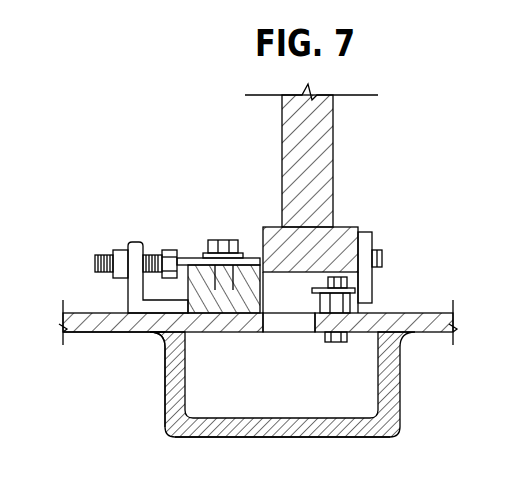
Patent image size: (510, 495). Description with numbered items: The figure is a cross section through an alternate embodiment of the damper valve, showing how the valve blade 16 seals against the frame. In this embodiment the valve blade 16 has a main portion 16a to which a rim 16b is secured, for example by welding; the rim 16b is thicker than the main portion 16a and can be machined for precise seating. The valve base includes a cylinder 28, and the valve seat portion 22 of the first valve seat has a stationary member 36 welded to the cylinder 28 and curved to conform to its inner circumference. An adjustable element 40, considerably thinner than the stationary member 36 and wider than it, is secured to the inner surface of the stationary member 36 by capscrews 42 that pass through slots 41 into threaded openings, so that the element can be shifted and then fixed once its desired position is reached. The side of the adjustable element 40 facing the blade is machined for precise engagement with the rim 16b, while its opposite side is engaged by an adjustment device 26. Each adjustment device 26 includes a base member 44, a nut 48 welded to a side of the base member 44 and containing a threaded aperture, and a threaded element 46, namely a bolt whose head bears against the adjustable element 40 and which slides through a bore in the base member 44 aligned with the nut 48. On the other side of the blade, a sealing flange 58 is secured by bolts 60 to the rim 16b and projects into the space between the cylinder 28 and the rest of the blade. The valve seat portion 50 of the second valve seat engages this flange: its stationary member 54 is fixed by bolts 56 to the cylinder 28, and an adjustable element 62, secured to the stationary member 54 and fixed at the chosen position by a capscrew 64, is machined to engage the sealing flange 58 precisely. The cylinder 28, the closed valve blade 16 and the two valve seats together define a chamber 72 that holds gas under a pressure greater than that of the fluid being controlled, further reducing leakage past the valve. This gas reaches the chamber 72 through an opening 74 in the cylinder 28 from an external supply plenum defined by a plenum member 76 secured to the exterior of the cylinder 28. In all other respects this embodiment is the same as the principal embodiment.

The valve blade 16 is at (330, 155).
The main portion 16a is at (323, 158).
The rim 16b is at (356, 233).
The valve seat portion 22 is at (212, 228).
The adjustment device 26 is at (124, 228).
The cylinder 28 is at (261, 357).
The stationary member 36 is at (163, 340).
The adjustable element 40 is at (200, 280).
The slots 41 is at (253, 258).
The capscrews 42 is at (232, 240).
The base member 44 is at (118, 333).
The threaded element 46 is at (159, 250).
The nut 48 is at (117, 251).
The valve seat portion 50 is at (323, 279).
The stationary member 54 is at (327, 334).
The bolts 56 is at (337, 297).
The sealing flange 58 is at (373, 288).
The bolts 60 is at (383, 256).
The adjustable element 62 is at (322, 375).
The capscrew 64 is at (401, 425).
The chamber 72 is at (306, 298).
The opening 74 is at (275, 333).
The plenum member 76 is at (286, 400).